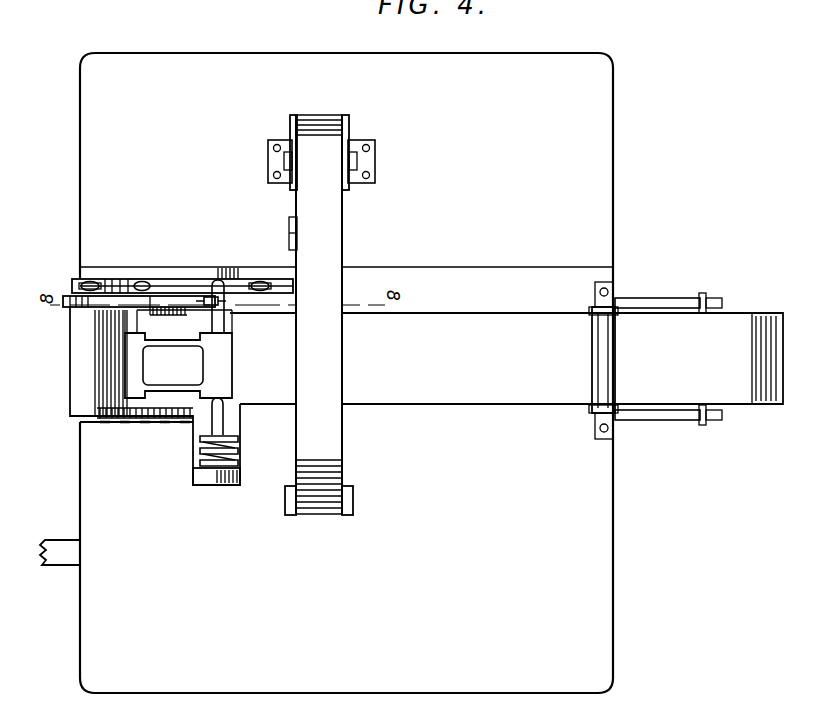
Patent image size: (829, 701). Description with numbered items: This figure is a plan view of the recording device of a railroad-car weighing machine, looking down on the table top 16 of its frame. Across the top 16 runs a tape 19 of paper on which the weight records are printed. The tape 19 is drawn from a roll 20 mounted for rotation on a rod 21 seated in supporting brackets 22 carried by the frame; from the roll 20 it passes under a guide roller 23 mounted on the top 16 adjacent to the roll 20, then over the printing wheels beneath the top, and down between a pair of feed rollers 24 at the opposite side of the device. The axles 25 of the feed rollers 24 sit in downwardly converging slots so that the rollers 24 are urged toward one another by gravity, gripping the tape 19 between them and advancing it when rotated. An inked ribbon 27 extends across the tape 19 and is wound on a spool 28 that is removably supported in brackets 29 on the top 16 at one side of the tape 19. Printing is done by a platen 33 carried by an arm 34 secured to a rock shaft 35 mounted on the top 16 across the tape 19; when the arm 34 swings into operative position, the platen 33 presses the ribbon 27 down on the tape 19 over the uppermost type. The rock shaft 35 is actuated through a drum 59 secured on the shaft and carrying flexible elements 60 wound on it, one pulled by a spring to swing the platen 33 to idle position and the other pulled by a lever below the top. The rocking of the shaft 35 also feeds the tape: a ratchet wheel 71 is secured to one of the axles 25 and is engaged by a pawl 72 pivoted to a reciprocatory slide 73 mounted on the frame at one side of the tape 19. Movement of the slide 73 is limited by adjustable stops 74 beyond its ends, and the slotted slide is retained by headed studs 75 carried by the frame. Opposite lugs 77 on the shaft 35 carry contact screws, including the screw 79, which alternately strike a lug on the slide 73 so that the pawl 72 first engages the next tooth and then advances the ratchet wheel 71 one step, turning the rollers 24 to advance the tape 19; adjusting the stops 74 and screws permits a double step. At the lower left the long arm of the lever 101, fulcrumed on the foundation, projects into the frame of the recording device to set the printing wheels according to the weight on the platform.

The table top 16 is at (592, 190).
The tape 19 is at (421, 358).
The roll 20 is at (752, 316).
The rod 21 is at (701, 297).
The supporting brackets 22 is at (652, 298).
The guide roller 23 is at (596, 396).
The feed rollers 24 is at (128, 424).
The axles 25 is at (162, 424).
The inked ribbon 27 is at (319, 315).
The spool 28 is at (350, 126).
The brackets 29 is at (358, 160).
The platen 33 is at (133, 369).
The arm 34 is at (197, 388).
The rock shaft 35 is at (223, 422).
The drum 59 is at (238, 469).
The flexible elements 60 is at (238, 448).
The ratchet wheel 71 is at (72, 310).
The pawl 72 is at (124, 284).
The slide 73 is at (165, 283).
The adjustable stops 74 is at (84, 282).
The headed studs 75 is at (141, 282).
The lugs 77 is at (222, 317).
The contact screw 79 is at (210, 306).
The lever 101 is at (70, 563).